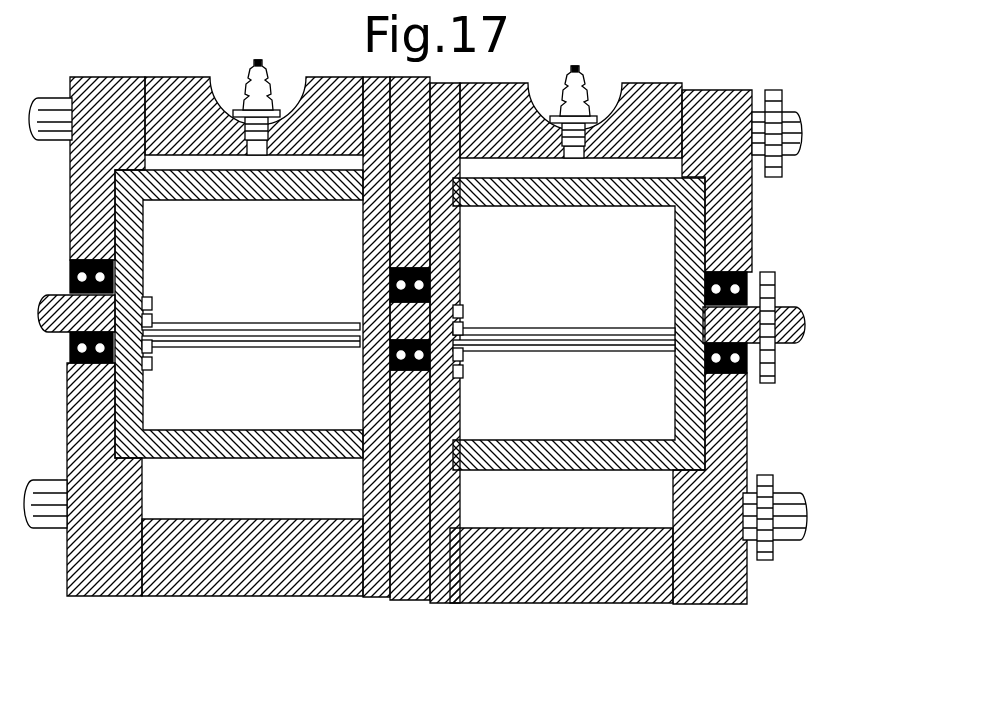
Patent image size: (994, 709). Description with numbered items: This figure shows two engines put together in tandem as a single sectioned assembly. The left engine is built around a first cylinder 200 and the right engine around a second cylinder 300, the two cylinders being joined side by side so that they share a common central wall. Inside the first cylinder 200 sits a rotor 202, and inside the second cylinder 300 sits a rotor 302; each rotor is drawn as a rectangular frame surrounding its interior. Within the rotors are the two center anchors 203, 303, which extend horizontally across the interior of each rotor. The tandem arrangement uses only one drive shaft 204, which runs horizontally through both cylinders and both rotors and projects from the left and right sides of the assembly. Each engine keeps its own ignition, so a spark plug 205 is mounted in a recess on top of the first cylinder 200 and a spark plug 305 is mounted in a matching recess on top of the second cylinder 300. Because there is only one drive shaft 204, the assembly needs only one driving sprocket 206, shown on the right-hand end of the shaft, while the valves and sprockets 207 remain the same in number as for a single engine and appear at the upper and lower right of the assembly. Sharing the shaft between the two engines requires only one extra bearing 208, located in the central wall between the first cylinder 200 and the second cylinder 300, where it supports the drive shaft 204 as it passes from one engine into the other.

The cylinder 200 is at (263, 603).
The rotor 202 is at (257, 463).
The center anchor 203 is at (263, 350).
The drive shaft 204 is at (43, 293).
The spark plug 205 is at (278, 84).
The driving sprocket 206 is at (781, 282).
The valves and sprockets 207 is at (784, 90).
The extra bearing 208 is at (430, 284).
The cylinder 300 is at (552, 608).
The rotor 302 is at (570, 472).
The center anchor 303 is at (565, 355).
The spark plug 305 is at (591, 90).